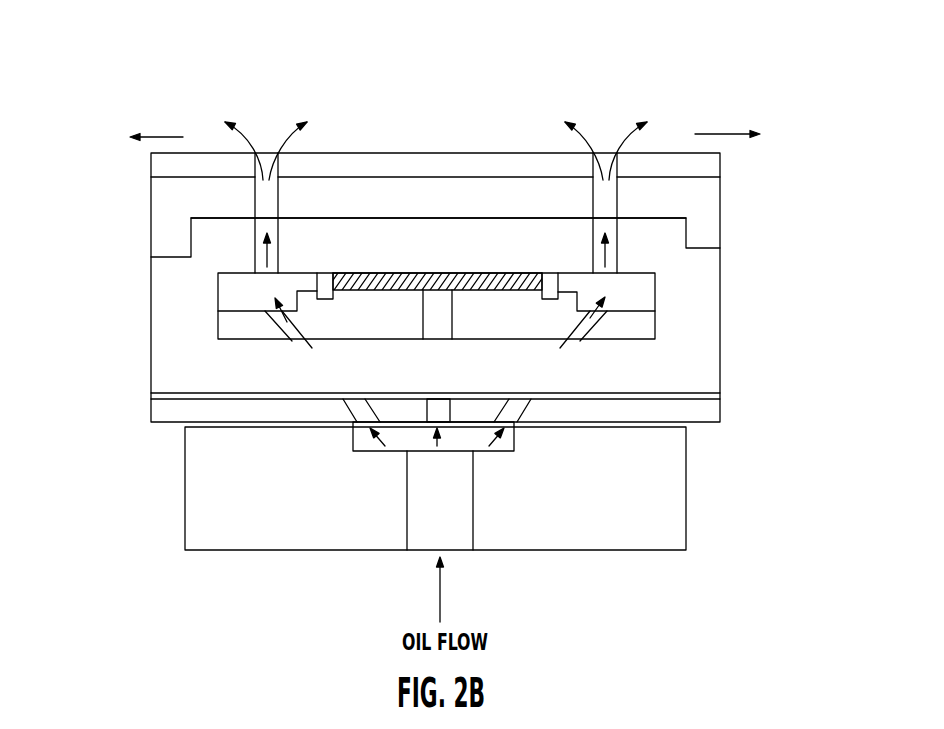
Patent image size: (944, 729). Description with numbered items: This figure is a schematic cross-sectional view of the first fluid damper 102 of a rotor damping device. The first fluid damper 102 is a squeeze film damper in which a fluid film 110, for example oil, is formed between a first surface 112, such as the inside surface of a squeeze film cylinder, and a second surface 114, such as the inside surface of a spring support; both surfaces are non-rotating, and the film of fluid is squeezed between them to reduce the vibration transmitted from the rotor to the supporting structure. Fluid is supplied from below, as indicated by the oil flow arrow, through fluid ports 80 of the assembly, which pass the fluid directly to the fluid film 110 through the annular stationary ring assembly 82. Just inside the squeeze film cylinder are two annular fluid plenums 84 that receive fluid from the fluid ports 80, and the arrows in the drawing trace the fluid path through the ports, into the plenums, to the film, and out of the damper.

The first fluid damper 102 is at (172, 79).
The fluid ports 80 is at (279, 252).
The annular stationary ring assembly 82 is at (750, 378).
The annular fluid plenums 84 is at (240, 292).
The fluid film 110 is at (431, 280).
The first surface 112 is at (403, 330).
The second surface 114 is at (412, 255).